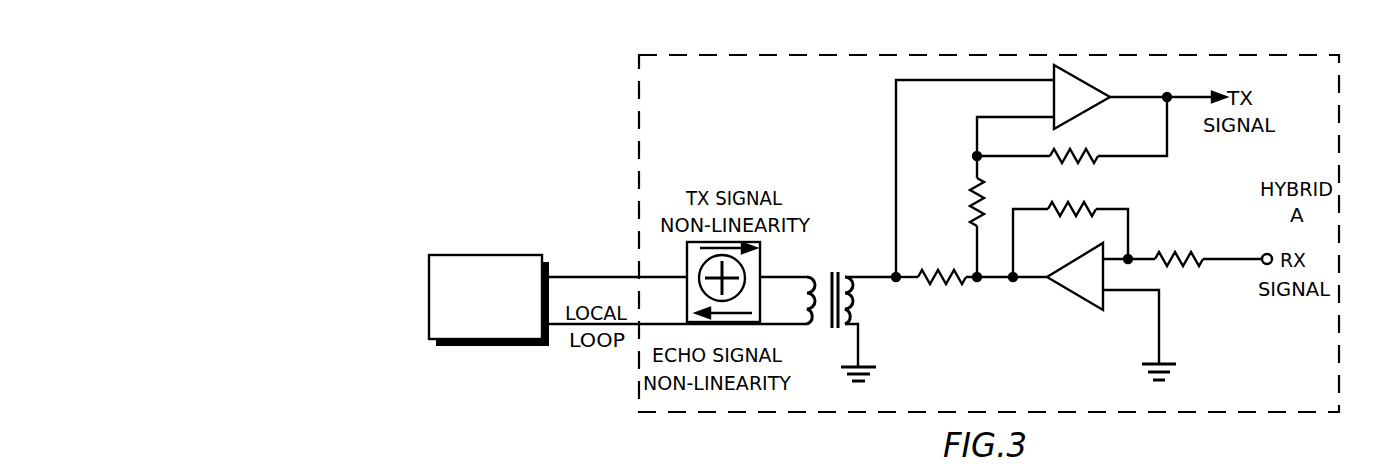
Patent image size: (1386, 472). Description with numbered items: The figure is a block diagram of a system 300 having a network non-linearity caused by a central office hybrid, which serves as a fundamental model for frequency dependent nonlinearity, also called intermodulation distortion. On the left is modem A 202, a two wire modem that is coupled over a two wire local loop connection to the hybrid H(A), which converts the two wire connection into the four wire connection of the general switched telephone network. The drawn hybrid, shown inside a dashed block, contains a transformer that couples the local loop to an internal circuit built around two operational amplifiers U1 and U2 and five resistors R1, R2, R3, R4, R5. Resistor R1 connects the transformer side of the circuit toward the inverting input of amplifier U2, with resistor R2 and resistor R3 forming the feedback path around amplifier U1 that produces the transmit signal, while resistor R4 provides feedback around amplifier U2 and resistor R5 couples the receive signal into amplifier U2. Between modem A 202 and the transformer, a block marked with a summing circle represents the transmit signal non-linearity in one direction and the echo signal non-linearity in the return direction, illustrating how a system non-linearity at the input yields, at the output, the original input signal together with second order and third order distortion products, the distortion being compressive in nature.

The network non-linearity system 300 is at (581, 55).
The modem A 202 is at (478, 255).
The resistor R1 is at (942, 265).
The resistor R2 is at (963, 202).
The resistor R3 is at (1074, 146).
The resistor R4 is at (1072, 198).
The resistor R5 is at (1179, 246).
The operational amplifier U1 is at (1082, 97).
The operational amplifier U2 is at (1075, 276).